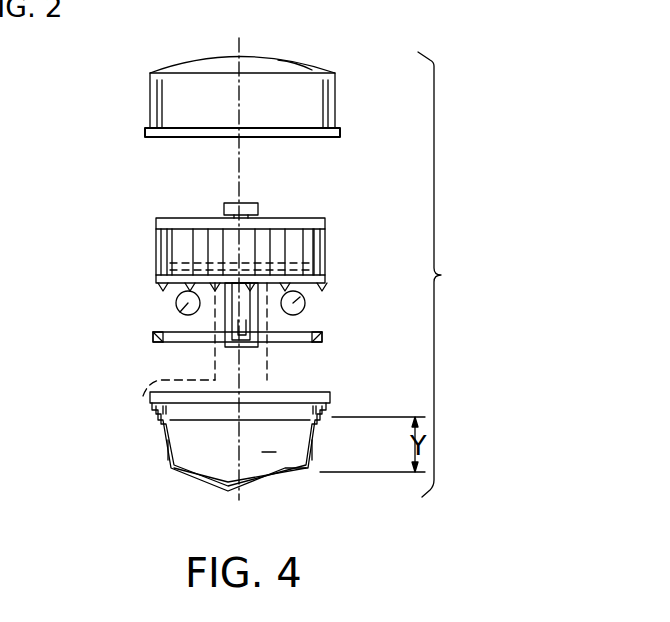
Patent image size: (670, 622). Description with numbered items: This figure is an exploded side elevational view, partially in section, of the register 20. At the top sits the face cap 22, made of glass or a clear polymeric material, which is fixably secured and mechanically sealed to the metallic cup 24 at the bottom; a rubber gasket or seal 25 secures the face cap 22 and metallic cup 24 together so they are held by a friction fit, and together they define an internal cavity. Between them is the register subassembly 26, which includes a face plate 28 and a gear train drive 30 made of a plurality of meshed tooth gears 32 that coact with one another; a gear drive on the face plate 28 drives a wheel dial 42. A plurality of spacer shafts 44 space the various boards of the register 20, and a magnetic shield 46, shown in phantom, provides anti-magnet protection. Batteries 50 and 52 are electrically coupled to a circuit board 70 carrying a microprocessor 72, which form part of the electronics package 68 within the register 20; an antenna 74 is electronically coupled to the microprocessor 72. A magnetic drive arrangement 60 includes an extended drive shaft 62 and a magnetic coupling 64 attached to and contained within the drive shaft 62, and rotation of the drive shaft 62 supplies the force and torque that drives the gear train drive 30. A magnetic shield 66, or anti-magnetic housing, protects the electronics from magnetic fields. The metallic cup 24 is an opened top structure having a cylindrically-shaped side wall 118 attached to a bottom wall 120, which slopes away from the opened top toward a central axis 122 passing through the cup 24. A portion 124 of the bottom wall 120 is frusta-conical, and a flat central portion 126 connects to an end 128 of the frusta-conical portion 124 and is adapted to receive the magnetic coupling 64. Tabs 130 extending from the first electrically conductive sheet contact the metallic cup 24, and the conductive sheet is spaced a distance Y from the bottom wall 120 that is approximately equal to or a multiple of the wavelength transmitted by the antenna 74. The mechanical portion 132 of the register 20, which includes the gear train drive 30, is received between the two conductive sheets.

The register 20 is at (450, 274).
The face cap 22 is at (283, 50).
The metallic cup 24 is at (322, 444).
The rubber gasket or seal 25 is at (150, 365).
The register subassembly 26 is at (148, 216).
The face plate 28 is at (330, 218).
The gear train drive 30 is at (262, 262).
The gears 32 is at (186, 280).
The wheel dial 42 is at (234, 202).
The spacer shafts 44 is at (158, 270).
The magnetic shield 46 is at (150, 396).
The battery 50 is at (153, 334).
The battery 52 is at (305, 305).
The magnetic drive arrangement 60 is at (322, 337).
The drive shaft 62 is at (232, 304).
The magnetic coupling 64 is at (246, 348).
The magnetic shield 66 is at (258, 345).
The electronics package 68 is at (336, 260).
The circuit board 70 is at (330, 289).
The microprocessor 72 is at (156, 252).
The antenna 74 is at (156, 240).
The cylindrically-shaped side wall 118 is at (164, 446).
The bottom wall 120 is at (200, 480).
The central axis 122 is at (240, 491).
The frusta-conical portion 124 is at (228, 490).
The flat central portion 126 is at (300, 487).
The end 128 is at (178, 465).
The tabs 130 is at (168, 292).
The mechanical portion 132 is at (326, 236).